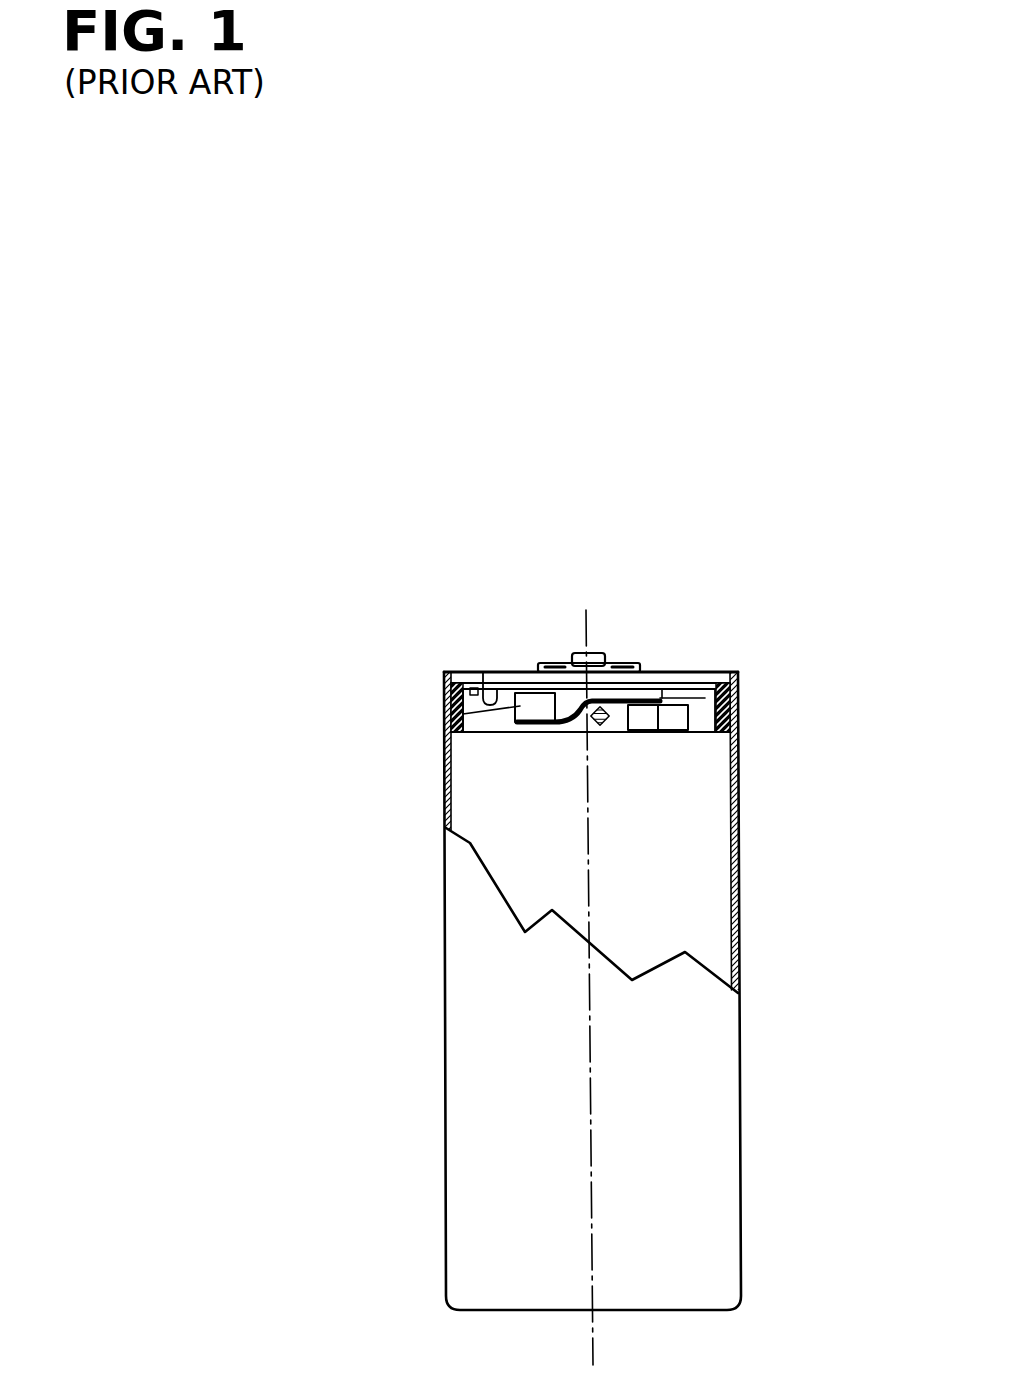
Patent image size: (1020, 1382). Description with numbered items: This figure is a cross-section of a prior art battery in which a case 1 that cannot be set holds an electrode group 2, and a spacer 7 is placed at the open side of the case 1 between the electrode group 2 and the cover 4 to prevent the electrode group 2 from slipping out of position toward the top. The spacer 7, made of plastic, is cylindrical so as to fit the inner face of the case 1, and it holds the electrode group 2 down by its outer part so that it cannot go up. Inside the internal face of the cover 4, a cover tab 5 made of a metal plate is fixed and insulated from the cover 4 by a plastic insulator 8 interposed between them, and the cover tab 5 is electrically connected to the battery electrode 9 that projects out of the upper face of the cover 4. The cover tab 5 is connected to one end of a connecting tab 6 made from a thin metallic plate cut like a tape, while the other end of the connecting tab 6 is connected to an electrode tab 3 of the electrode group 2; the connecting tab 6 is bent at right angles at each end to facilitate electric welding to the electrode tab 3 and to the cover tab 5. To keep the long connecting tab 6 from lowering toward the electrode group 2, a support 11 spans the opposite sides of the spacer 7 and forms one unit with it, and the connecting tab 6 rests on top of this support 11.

The case 1 is at (738, 818).
The electrode group 2 is at (670, 925).
The electrode tab 3 is at (674, 723).
The cover 4 is at (682, 668).
The cover tab 5 is at (442, 718).
The connecting tab 6 is at (628, 707).
The spacer 7 is at (456, 736).
The plastic insulator 8 is at (483, 672).
The battery electrode 9 is at (574, 654).
The support 11 is at (588, 730).